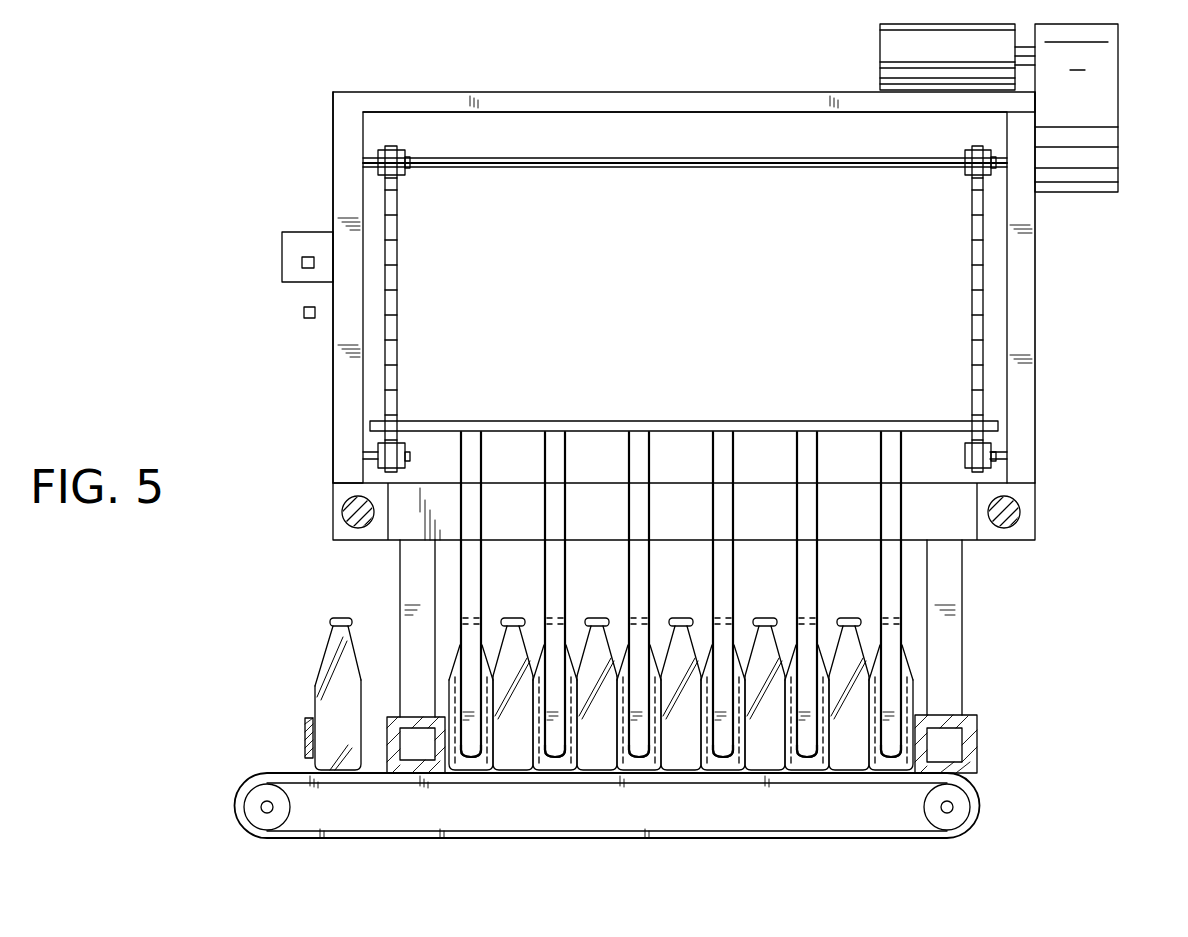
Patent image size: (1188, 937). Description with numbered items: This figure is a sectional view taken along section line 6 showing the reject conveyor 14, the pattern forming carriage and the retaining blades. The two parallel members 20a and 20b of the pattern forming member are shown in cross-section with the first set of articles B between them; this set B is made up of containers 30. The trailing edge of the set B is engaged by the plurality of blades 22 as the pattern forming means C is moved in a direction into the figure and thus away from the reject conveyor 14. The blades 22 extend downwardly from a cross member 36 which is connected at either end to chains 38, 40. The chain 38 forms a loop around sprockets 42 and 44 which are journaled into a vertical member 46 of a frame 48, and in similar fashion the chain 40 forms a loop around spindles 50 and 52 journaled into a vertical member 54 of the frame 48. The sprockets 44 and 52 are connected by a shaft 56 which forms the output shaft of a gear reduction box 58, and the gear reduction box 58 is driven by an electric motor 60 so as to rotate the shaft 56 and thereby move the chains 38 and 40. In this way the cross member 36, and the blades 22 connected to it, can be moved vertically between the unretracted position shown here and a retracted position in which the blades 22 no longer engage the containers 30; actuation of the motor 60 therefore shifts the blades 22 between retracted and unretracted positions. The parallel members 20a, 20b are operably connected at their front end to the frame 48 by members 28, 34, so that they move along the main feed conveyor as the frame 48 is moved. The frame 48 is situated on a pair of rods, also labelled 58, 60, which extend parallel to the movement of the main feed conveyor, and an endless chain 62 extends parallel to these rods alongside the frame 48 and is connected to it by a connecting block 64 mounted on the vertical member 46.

The section line 6- 6 is at (517, 30).
The reject conveyor 14 is at (282, 773).
The parallel member 20a is at (978, 742).
The parallel member 20b is at (388, 730).
The blades 22 is at (546, 473).
The member 28 is at (410, 590).
The containers 30 is at (474, 766).
The member 34 is at (963, 588).
The cross member 36 is at (622, 421).
The chain 38 is at (400, 295).
The chain 40 is at (975, 300).
The sprocket 42 is at (408, 180).
The sprocket 44 is at (408, 452).
The vertical member 46 is at (338, 177).
The frame 48 is at (328, 380).
The spindle 50 is at (968, 176).
The spindle 52 is at (962, 456).
The vertical member 54 is at (1037, 270).
The shaft 56 is at (750, 172).
The gear reduction box 58 is at (1112, 87).
The electric motor 60 is at (893, 52).
The endless chain 62 is at (304, 314).
The connecting block 64 is at (290, 271).
The first set of articles B is at (921, 665).
The pattern forming means C is at (680, 316).